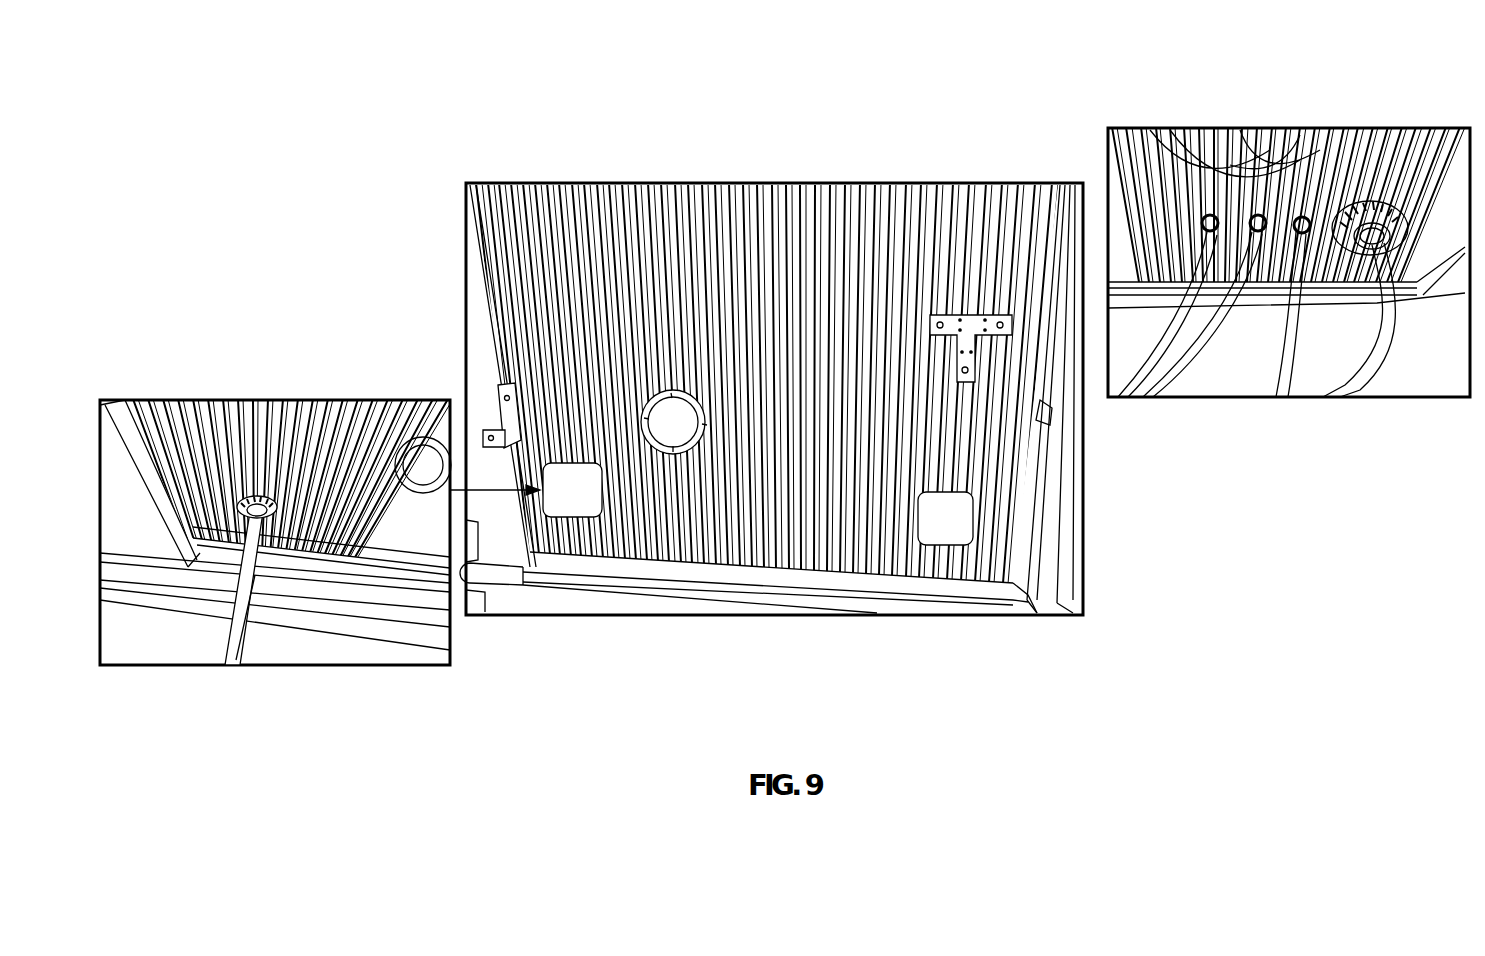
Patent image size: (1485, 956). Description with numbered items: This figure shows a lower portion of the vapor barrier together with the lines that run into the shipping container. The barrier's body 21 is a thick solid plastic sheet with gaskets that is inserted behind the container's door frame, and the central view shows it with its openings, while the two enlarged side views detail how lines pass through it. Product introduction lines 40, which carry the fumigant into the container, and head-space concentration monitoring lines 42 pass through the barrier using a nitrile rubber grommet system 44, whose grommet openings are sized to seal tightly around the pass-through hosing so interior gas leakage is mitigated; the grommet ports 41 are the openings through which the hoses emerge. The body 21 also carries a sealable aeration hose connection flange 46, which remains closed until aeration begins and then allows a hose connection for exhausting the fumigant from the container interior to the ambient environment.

The body 21 is at (746, 195).
The product introduction lines 40 is at (245, 625).
The grommet ports 41 is at (1222, 212).
The head-space concentration monitoring lines 42 is at (1283, 386).
The nitrile rubber grommet system 44 is at (262, 480).
The sealable aeration hose connection flange 46 is at (686, 396).